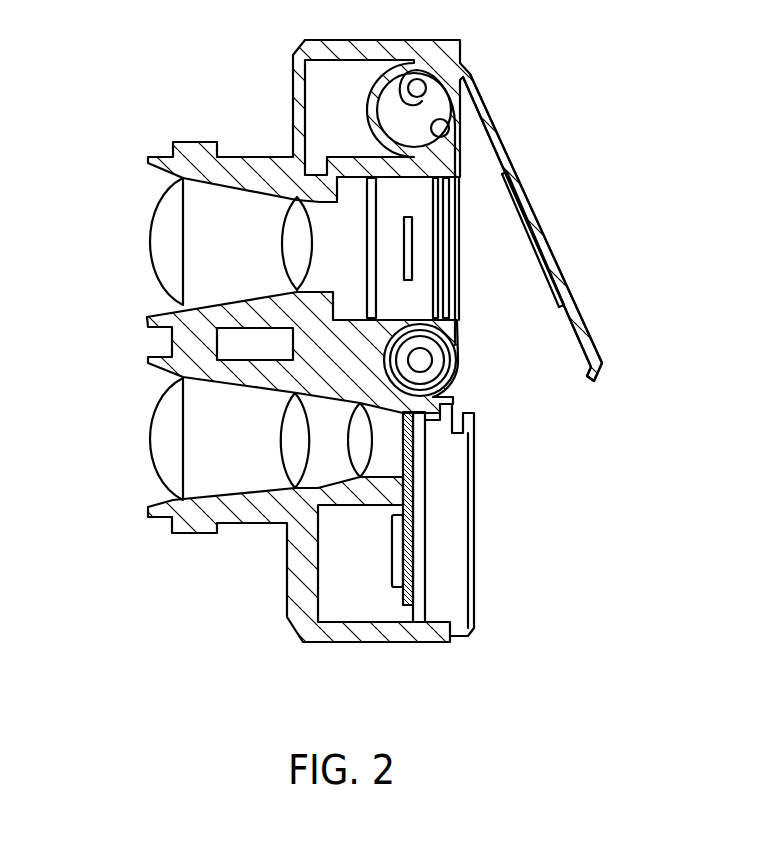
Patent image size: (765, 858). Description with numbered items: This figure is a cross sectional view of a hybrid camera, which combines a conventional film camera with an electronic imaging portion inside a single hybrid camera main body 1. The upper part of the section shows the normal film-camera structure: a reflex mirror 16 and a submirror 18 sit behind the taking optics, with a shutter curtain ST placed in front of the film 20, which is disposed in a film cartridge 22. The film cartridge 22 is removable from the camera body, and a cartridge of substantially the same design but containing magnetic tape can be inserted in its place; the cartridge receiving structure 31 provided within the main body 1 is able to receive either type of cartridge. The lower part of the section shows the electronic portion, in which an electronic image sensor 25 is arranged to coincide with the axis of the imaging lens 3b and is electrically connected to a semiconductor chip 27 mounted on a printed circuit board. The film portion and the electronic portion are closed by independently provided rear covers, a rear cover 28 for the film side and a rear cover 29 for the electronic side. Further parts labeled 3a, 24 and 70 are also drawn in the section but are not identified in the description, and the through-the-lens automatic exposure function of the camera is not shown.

The hybrid camera main body 1 is at (347, 643).
The first lens 3a is at (193, 240).
The imaging lens 3b is at (193, 443).
The reflex mirror 16 is at (376, 201).
The submirror 18 is at (413, 247).
The shutter curtain ST is at (450, 298).
The film 20 is at (460, 167).
The film cartridge 22 is at (455, 374).
The pressure plate 24 is at (425, 582).
The electronic image sensor 25 is at (404, 460).
The semiconductor chip 27 is at (395, 571).
The rear cover 28 is at (588, 322).
The rear cover 29 is at (476, 500).
The cartridge receiving structure 31 is at (327, 377).
The spring 70 is at (456, 203).